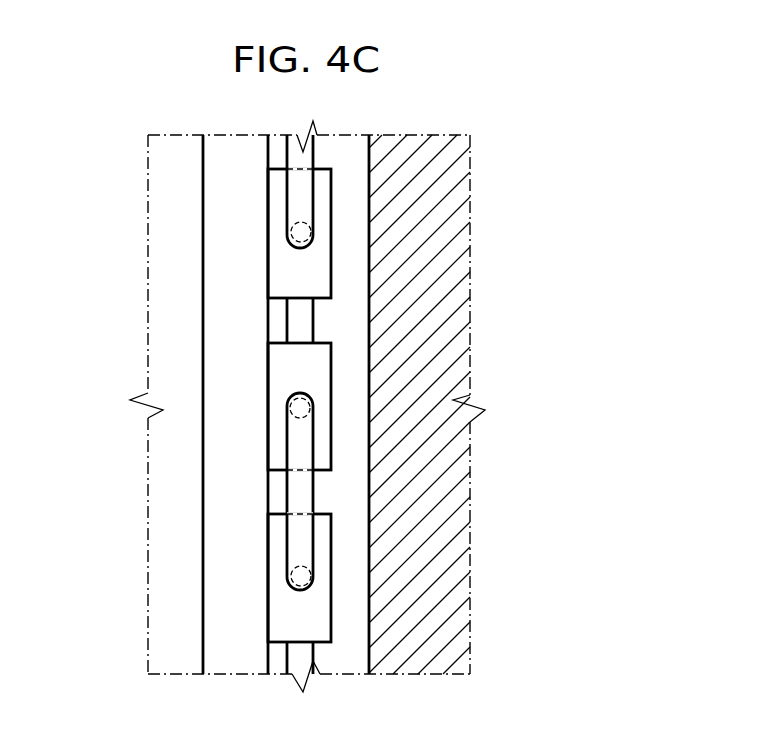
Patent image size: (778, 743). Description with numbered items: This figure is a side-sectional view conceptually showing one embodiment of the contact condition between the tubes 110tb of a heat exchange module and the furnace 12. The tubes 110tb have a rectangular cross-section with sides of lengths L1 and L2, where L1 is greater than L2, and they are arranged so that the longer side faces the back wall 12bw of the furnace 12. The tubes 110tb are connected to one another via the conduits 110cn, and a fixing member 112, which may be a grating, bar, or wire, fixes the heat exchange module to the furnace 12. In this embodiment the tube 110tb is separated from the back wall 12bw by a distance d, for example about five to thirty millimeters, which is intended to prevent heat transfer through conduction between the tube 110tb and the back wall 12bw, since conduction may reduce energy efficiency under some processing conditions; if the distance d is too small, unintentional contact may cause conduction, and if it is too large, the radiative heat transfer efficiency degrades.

The fixing member 112 is at (220, 198).
The tube 110tb is at (283, 265).
The conduit 110cn is at (290, 445).
The back wall 12bw is at (333, 618).
The furnace 12 is at (423, 658).
The distance d is at (369, 248).
The length L1 is at (336, 343).
The length L2 is at (331, 369).